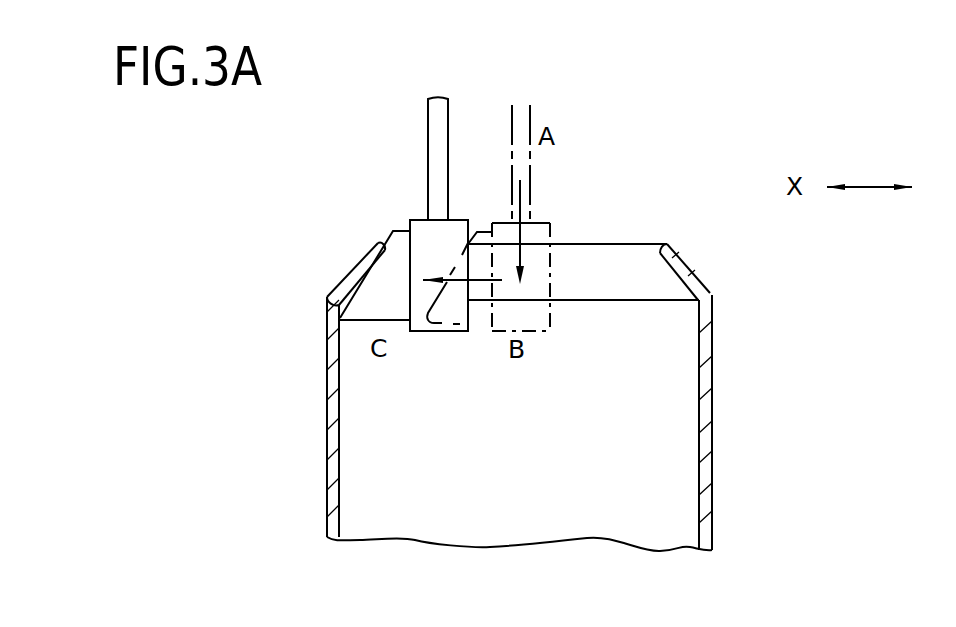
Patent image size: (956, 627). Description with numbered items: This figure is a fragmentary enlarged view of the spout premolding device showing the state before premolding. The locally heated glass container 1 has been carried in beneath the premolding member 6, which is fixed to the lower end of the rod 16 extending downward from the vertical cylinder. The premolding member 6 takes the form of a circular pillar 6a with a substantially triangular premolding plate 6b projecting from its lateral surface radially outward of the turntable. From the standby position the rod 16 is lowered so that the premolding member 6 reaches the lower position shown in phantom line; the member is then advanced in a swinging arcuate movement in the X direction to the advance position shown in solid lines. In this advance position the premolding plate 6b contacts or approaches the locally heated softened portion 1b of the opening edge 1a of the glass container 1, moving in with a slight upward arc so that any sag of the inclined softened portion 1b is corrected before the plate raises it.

The glass container 1 is at (712, 422).
The opening edge 1a is at (689, 267).
The softened portion 1b is at (359, 264).
The premolding member 6 is at (390, 185).
The circular pillar 6a is at (463, 220).
The premolding plate 6b is at (340, 318).
The rod 16 is at (428, 113).